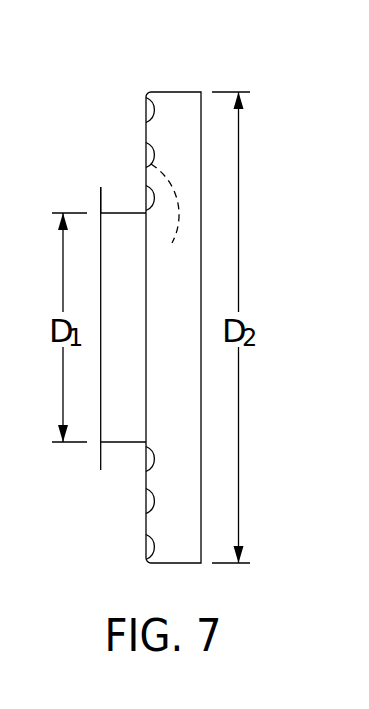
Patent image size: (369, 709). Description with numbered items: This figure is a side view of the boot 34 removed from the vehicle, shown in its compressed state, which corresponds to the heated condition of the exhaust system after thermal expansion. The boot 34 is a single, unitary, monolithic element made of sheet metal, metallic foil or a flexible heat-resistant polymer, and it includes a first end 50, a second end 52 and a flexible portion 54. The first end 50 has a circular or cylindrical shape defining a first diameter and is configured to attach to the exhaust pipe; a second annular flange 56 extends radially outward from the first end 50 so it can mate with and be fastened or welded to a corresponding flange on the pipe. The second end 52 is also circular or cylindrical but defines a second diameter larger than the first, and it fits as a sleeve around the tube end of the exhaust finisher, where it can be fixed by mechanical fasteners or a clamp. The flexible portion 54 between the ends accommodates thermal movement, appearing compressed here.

The boot 34 is at (123, 289).
The second end 52 is at (176, 119).
The first end 50 is at (118, 233).
The flexible portion 54 is at (169, 216).
The second annular flange 56 is at (100, 200).